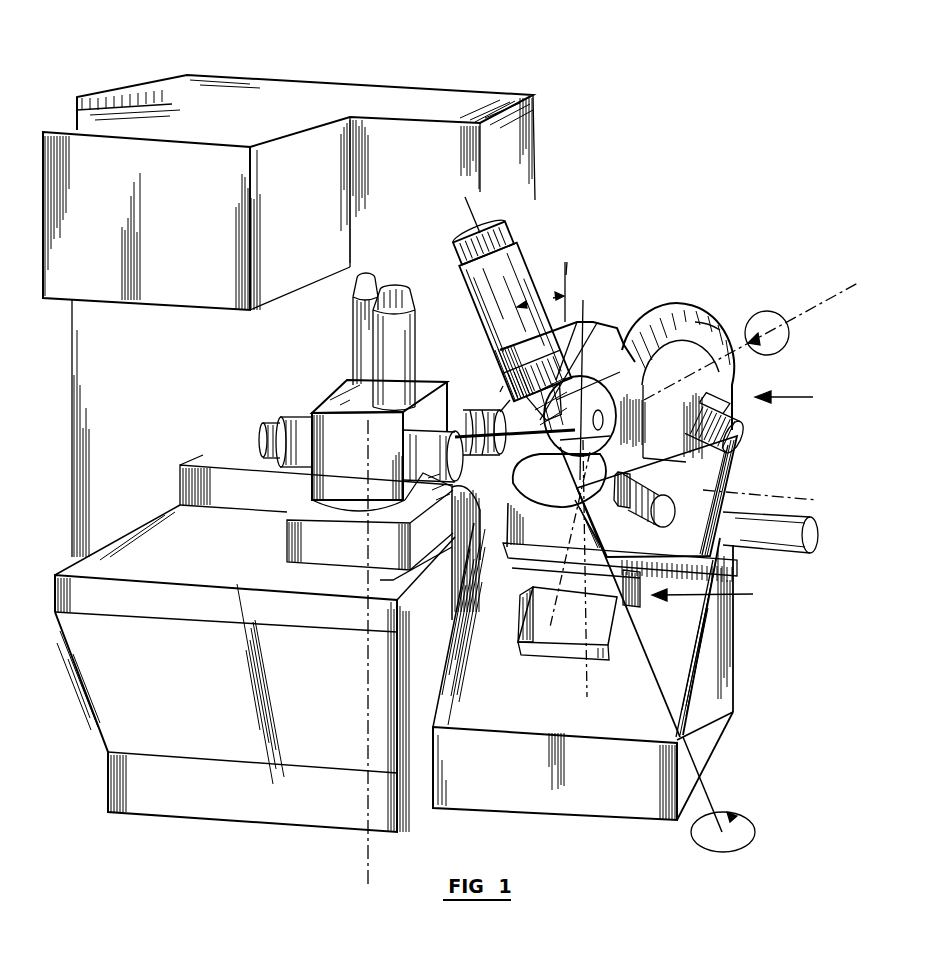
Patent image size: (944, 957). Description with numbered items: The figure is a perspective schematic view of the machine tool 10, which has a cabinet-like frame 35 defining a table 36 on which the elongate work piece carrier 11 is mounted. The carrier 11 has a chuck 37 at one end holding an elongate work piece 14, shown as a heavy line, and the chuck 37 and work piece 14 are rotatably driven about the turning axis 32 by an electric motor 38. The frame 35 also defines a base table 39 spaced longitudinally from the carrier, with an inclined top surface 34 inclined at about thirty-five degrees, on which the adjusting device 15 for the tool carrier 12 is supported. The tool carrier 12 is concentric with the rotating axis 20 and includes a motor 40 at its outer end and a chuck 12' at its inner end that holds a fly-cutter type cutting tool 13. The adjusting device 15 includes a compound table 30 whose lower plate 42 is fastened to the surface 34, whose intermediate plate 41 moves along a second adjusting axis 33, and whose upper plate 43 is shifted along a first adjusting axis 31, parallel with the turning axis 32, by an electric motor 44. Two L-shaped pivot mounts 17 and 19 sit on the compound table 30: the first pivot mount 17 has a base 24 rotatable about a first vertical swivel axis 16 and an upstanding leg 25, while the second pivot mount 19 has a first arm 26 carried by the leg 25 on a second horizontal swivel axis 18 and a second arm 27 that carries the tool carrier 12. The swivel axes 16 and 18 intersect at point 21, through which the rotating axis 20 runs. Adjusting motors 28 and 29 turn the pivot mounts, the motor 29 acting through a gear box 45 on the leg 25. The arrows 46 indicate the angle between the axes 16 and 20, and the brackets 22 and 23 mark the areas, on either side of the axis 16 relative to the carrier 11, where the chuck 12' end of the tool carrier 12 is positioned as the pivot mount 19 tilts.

The machine tool 10 is at (321, 75).
The work piece carrier 11 is at (290, 387).
The tool carrier 12 is at (526, 358).
The chuck 12' is at (472, 360).
The cutting tool 13 is at (628, 333).
The work piece 14 is at (500, 412).
The adjusting device 15 is at (797, 397).
The first vertical swivel axis 16 is at (566, 275).
The first pivot mount 17 is at (688, 498).
The second horizontal swivel axis 18 is at (848, 293).
The second pivot mount 19 is at (597, 318).
The rotating axis 20 is at (711, 797).
The intersecting point 21 is at (581, 466).
The bracket 22 is at (559, 480).
The bracket 23 is at (661, 460).
The base 24 is at (541, 526).
The leg 25 is at (683, 350).
The first arm 26 is at (590, 414).
The second arm 27 is at (537, 363).
The adjusting motor 28 is at (656, 547).
The adjusting motor 29 is at (746, 443).
The compound table 30 is at (715, 595).
The first adjusting axis 31 is at (805, 498).
The turning axis 32 is at (347, 425).
The second adjusting axis 33 is at (550, 627).
The inclined top surface 34 is at (487, 722).
The frame 35 is at (430, 97).
The table 36 is at (178, 571).
The chuck 37 is at (454, 444).
The electric motor 38 is at (357, 335).
The base table 39 is at (726, 685).
The motor 40 is at (520, 228).
The intermediate plate 41 is at (525, 577).
The lower plate 42 is at (585, 616).
The upper plate 43 is at (696, 547).
The electric motor 44 is at (797, 552).
The gear box 45 is at (703, 320).
The arrows 46 is at (541, 292).